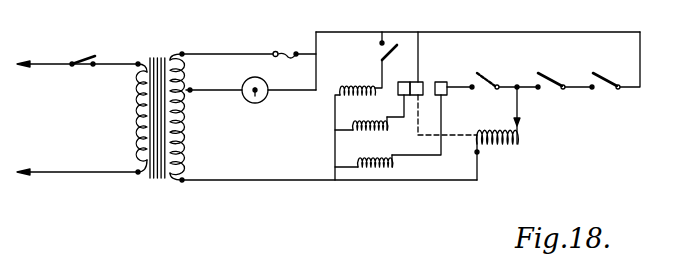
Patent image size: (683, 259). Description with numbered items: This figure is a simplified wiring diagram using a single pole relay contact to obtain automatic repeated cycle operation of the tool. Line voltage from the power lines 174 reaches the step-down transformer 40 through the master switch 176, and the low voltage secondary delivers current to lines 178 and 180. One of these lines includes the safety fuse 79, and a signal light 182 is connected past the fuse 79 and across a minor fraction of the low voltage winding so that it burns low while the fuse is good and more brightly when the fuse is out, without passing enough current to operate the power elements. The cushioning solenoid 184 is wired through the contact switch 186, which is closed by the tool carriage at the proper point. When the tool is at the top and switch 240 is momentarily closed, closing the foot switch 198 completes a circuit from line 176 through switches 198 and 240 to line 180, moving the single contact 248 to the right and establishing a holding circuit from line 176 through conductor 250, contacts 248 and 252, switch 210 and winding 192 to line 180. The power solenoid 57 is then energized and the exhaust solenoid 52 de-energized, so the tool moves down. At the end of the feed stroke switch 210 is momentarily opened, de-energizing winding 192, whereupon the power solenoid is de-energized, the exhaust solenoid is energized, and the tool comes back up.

The power lines 174 is at (47, 64).
The master switch 176 is at (84, 58).
The step-down transformer 40 is at (158, 181).
The line 178 is at (220, 54).
The safety fuse 79 is at (284, 52).
The signal light 182 is at (252, 101).
The line 180 is at (271, 181).
The contact switch 186 is at (399, 44).
The cushioning solenoid 184 is at (353, 85).
The conductor 250 is at (420, 49).
The single contact 248 is at (423, 82).
The contact 252 is at (449, 81).
The exhaust solenoid 52 is at (352, 132).
The power solenoid 57 is at (393, 171).
The switch 210 is at (488, 88).
The switch 240 is at (550, 89).
The foot switch 198 is at (606, 89).
The winding 192 is at (519, 147).